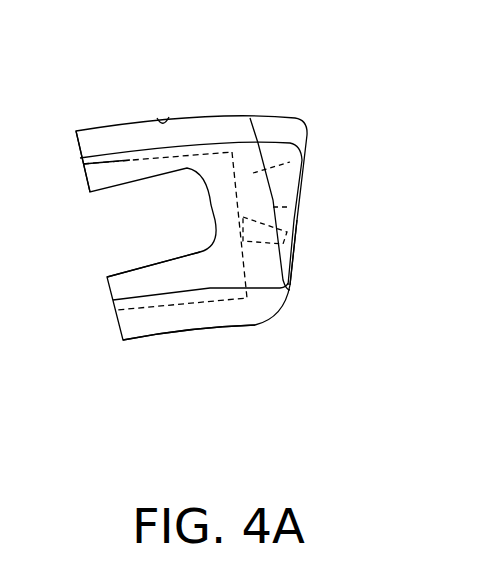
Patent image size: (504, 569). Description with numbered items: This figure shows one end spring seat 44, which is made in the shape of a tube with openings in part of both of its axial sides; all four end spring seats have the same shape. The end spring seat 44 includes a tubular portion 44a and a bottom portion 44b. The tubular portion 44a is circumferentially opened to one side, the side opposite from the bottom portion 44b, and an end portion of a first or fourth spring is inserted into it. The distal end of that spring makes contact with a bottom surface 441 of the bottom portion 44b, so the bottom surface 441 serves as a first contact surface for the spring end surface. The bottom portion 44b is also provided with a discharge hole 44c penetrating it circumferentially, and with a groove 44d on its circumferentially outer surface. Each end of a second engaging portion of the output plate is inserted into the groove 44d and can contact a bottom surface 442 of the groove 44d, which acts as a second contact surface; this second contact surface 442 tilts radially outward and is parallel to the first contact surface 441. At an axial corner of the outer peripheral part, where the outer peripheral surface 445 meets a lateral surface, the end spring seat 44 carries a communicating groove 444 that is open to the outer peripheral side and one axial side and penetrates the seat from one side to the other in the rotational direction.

The end spring seat 44 is at (308, 100).
The tubular portion 44a is at (108, 166).
The bottom portion 44b is at (270, 168).
The discharge hole 44c is at (305, 240).
The groove 44d is at (283, 190).
The bottom surface 441 is at (205, 255).
The bottom surface of the groove 442 is at (300, 218).
The communicating groove 444 is at (192, 117).
The outer peripheral surface 445 is at (263, 117).